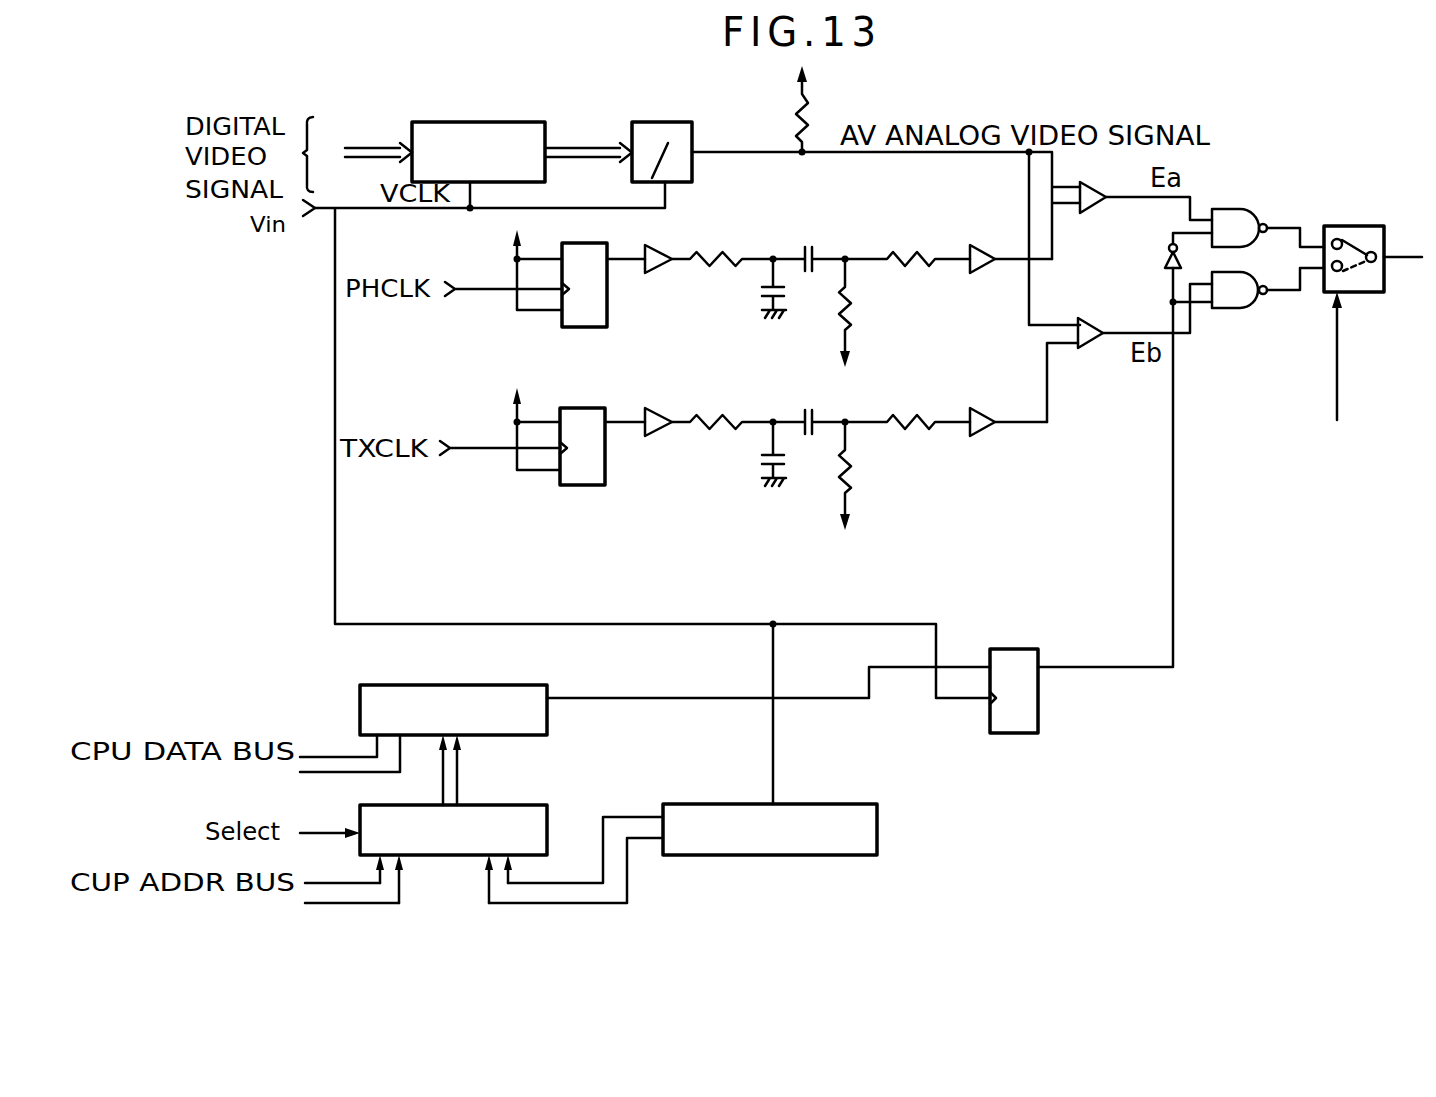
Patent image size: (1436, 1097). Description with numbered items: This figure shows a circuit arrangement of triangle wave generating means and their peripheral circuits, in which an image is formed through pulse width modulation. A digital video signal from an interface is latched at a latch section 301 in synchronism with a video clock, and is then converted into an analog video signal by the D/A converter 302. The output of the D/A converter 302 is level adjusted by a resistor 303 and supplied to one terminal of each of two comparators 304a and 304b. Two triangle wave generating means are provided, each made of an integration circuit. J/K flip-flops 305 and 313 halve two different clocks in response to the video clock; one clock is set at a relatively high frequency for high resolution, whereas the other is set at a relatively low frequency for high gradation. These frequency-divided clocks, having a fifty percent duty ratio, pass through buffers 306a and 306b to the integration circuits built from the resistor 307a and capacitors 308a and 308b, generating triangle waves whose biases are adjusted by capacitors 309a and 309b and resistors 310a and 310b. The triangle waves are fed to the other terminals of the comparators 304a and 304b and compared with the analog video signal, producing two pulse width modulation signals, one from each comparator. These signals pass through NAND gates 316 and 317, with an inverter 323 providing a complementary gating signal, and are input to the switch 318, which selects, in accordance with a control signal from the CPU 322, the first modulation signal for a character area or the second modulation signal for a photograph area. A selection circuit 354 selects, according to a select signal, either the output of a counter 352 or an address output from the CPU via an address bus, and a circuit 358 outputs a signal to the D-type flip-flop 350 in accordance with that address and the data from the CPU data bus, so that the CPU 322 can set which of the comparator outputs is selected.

The latch section 301 is at (553, 106).
The D/A converter 302 is at (700, 106).
The resistor 303 is at (815, 106).
The comparator 304a is at (1095, 212).
The comparator 304b is at (1082, 320).
The J/K flip-flop 305 is at (592, 328).
The buffer 306a is at (657, 272).
The buffer 306b is at (657, 435).
The resistor 307a is at (711, 260).
The capacitor 308a is at (758, 291).
The capacitor 308b is at (760, 462).
The capacitor 309a is at (804, 256).
The capacitor 309b is at (808, 408).
The resistor 310a is at (852, 352).
The resistor 310b is at (855, 522).
The J/K flip-flop 313 is at (572, 486).
The NAND gate 316 is at (1238, 209).
The NAND gate 317 is at (1232, 308).
The switch 318 is at (1362, 228).
The CPU 322 is at (1308, 381).
The inverter 323 is at (1163, 262).
The D-type flip-flop 350 is at (1038, 700).
The counter 352 is at (845, 804).
The selection circuit 354 is at (510, 805).
The circuit 358 is at (527, 685).